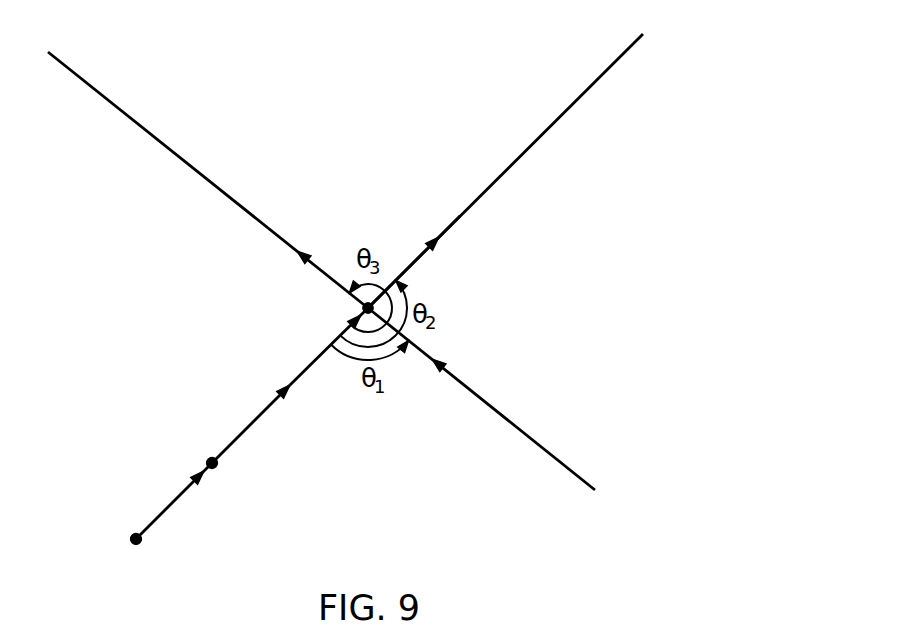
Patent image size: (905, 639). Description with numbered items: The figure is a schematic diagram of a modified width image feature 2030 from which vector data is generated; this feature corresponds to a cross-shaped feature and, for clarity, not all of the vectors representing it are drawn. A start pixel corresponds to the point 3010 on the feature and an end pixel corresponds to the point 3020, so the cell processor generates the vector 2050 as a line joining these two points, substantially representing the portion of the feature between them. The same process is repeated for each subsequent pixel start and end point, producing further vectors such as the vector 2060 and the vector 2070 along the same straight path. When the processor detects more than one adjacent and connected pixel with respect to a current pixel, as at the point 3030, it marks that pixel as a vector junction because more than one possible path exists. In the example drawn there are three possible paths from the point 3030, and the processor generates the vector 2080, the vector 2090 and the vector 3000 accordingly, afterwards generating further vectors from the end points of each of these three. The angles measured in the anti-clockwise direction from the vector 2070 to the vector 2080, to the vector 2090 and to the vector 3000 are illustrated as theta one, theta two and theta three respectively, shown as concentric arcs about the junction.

The modified width image feature 2030 is at (558, 118).
The vector 2050 is at (157, 516).
The vector 2060 is at (247, 431).
The vector 2070 is at (298, 376).
The vector 2080 is at (445, 363).
The vector 2090 is at (437, 244).
The vector 3000 is at (331, 276).
The point 3010 is at (141, 541).
The point 3020 is at (217, 466).
The point 3030 is at (365, 307).